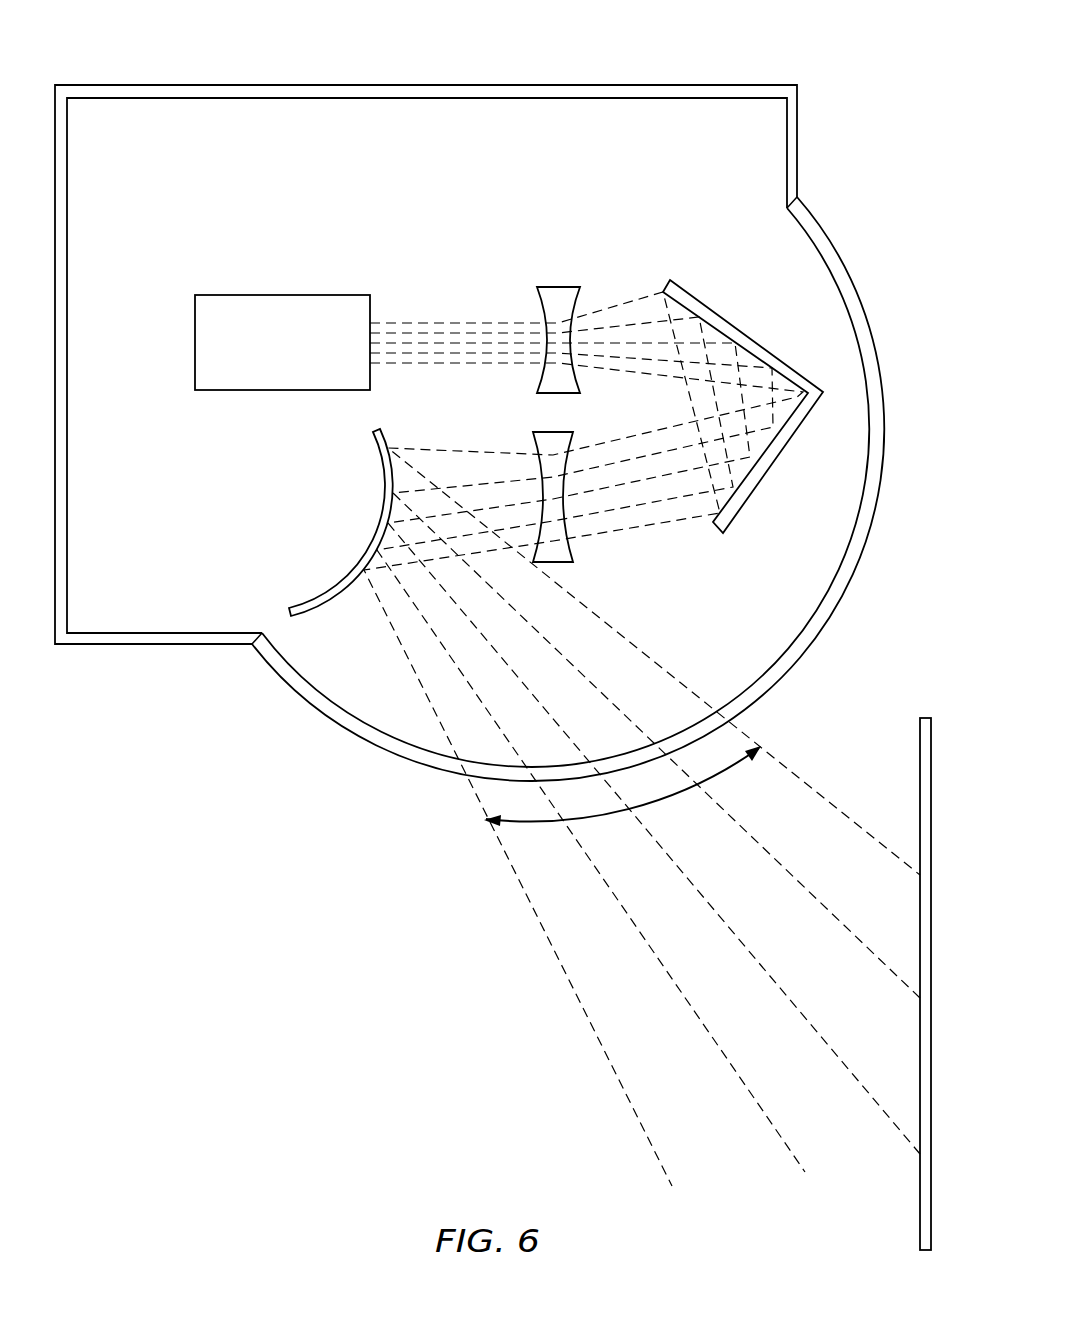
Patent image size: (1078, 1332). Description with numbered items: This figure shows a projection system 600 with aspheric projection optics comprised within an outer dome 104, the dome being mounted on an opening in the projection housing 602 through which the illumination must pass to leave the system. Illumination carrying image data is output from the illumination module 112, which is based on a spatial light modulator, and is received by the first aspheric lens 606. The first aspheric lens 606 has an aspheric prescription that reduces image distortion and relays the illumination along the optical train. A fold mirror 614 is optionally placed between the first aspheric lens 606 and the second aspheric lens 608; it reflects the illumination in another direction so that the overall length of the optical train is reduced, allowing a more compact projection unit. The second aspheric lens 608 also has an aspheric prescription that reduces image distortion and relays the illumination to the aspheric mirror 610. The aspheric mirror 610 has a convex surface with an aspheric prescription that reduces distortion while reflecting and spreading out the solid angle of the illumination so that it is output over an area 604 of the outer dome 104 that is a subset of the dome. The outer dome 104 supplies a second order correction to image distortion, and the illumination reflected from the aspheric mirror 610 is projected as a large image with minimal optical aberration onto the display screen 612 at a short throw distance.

The projection system 600 is at (282, 60).
The housing 602 is at (682, 85).
The outer dome 104 is at (838, 252).
The illumination module 112 is at (283, 295).
The first aspheric lens 606 is at (562, 285).
The second aspheric lens 608 is at (572, 548).
The fold mirror 614 is at (740, 331).
The aspheric mirror 610 is at (303, 602).
The area of the outer dome 604 is at (523, 826).
The display screen 612 is at (920, 1192).